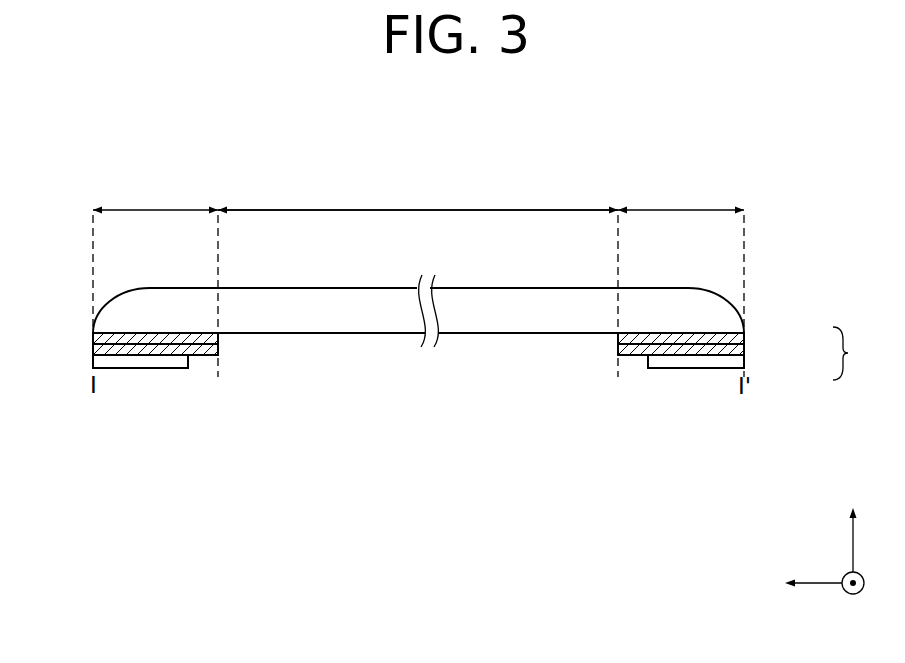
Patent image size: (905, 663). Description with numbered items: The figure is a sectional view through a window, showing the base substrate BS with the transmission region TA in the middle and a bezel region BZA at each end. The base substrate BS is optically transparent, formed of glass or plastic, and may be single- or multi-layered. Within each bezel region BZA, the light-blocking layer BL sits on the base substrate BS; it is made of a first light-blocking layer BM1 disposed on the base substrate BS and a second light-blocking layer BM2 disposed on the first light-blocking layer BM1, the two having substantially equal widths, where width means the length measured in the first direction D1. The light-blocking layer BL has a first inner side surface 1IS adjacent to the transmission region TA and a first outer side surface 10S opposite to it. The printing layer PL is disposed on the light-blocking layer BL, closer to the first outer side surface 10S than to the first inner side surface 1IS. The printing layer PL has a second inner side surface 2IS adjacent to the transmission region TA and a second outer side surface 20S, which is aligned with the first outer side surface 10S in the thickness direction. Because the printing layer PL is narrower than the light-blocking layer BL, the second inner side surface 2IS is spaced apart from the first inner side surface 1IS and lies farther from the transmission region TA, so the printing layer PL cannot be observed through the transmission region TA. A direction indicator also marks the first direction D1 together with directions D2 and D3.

The base substrate BS is at (713, 307).
The first light-blocking layer BM1 is at (733, 340).
The second light-blocking layer BM2 is at (733, 349).
The printing layer PL is at (737, 363).
The light-blocking layer BL is at (853, 353).
The first outer side surface 10S is at (90, 338).
The second outer side surface 20S is at (90, 362).
The first inner side surface 1IS is at (221, 339).
The second inner side surface 2IS is at (191, 363).
The bezel region BZA is at (418, 279).
The transmission region TA is at (418, 195).
The first direction D1 is at (798, 582).
The second direction D2 is at (853, 597).
The third direction D3 is at (853, 526).